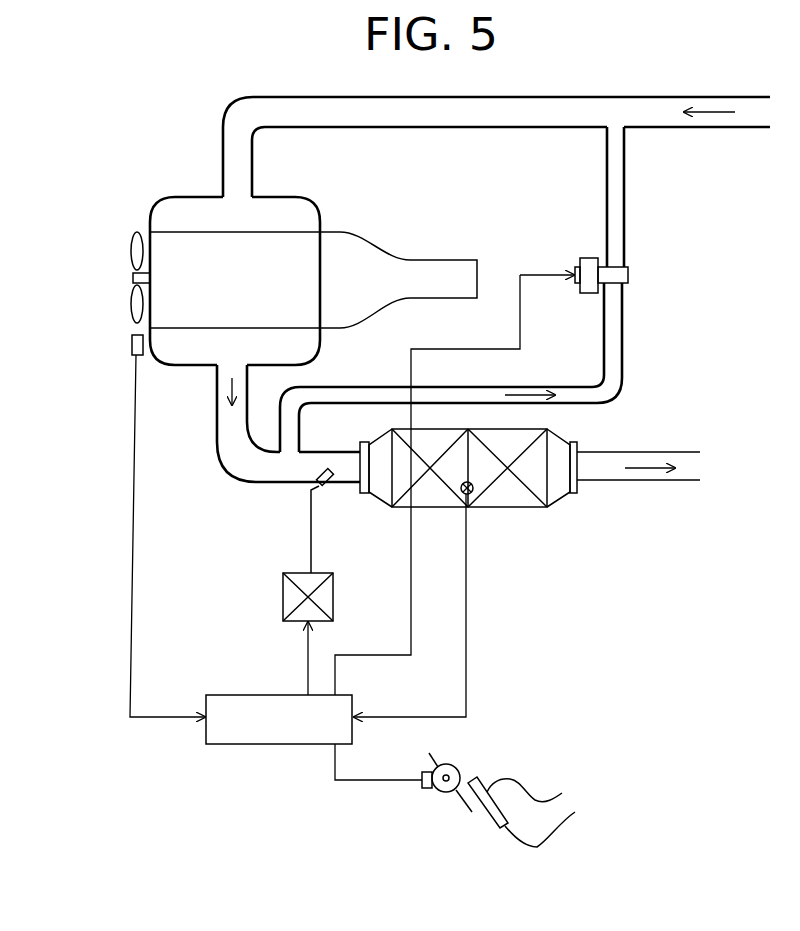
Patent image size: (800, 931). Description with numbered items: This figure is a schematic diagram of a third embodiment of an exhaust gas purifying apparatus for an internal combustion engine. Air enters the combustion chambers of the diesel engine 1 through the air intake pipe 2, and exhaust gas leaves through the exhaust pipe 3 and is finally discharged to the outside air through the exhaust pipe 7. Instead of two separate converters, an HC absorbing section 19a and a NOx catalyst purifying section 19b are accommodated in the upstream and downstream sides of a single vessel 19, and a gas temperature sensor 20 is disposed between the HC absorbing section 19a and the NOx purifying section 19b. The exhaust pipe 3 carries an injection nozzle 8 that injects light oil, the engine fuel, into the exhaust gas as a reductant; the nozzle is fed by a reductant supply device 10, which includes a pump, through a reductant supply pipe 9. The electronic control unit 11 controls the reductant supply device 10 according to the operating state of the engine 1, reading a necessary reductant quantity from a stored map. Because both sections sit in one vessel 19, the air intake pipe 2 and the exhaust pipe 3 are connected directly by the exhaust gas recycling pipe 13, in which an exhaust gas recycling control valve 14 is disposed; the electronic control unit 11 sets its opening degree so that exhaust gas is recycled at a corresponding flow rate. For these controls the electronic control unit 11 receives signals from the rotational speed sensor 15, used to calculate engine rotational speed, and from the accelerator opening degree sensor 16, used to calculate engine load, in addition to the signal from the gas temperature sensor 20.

The diesel engine 1 is at (338, 232).
The air intake pipe 2 is at (222, 155).
The exhaust pipe 3 is at (240, 482).
The exhaust pipe 7 is at (668, 452).
The injection nozzle 8 is at (326, 488).
The reductant supply pipe 9 is at (311, 535).
The reductant supply device 10 is at (283, 600).
The electronic control unit 11 is at (238, 744).
The exhaust gas recycling pipe 13 is at (625, 185).
The exhaust gas recycling control valve 14 is at (628, 275).
The rotational speed sensor 15 is at (132, 345).
The accelerator opening degree sensor 16 is at (425, 788).
The vessel 19 is at (498, 513).
The HC absorbing section 19a is at (432, 495).
The NOx catalyst purifying section 19b is at (555, 472).
The gas temperature sensor 20 is at (476, 490).